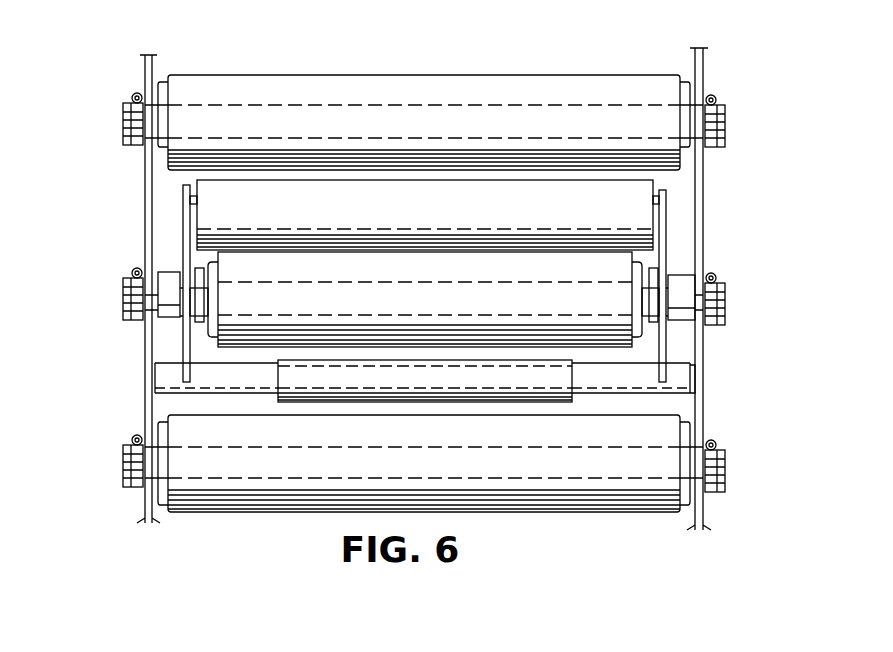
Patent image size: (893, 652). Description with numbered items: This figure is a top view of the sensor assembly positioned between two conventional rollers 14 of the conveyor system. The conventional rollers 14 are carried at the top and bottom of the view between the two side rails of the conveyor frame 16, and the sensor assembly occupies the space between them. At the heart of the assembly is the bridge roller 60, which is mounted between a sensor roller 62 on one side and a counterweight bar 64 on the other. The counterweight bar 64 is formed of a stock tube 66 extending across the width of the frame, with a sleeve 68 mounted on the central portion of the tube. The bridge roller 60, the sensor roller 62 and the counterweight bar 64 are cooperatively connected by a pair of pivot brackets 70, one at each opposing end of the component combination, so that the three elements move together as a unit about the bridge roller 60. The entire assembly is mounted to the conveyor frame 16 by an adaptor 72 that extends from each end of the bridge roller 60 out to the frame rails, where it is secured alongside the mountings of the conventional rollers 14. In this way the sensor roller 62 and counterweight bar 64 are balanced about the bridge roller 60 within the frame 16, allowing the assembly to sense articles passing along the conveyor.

The roller 14 is at (233, 92).
The conveyor frame 16 is at (148, 172).
The bridge roller 60 is at (255, 301).
The sensor roller 62 is at (598, 210).
The counterweight bar 64 is at (697, 378).
The stock tube 66 is at (155, 385).
The sleeve 68 is at (545, 385).
The pivot brackets 70 is at (662, 247).
The adaptor 72 is at (170, 292).